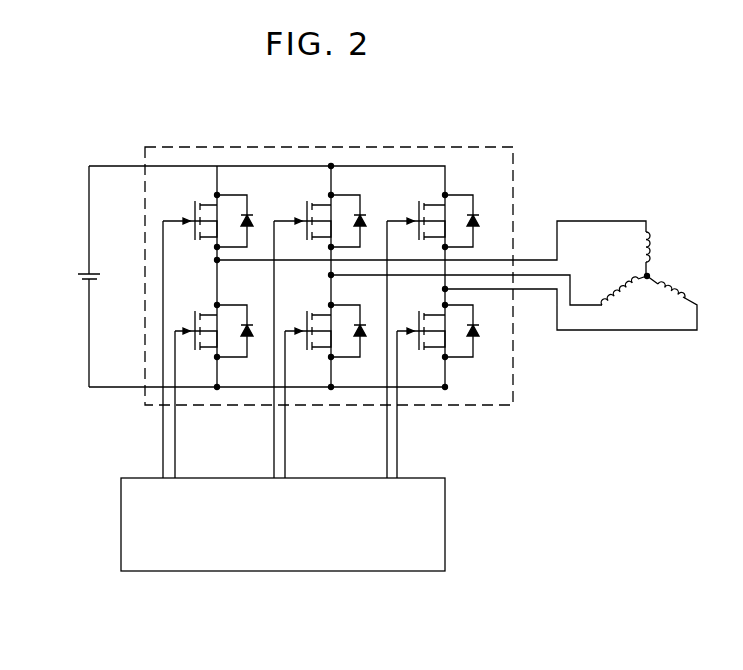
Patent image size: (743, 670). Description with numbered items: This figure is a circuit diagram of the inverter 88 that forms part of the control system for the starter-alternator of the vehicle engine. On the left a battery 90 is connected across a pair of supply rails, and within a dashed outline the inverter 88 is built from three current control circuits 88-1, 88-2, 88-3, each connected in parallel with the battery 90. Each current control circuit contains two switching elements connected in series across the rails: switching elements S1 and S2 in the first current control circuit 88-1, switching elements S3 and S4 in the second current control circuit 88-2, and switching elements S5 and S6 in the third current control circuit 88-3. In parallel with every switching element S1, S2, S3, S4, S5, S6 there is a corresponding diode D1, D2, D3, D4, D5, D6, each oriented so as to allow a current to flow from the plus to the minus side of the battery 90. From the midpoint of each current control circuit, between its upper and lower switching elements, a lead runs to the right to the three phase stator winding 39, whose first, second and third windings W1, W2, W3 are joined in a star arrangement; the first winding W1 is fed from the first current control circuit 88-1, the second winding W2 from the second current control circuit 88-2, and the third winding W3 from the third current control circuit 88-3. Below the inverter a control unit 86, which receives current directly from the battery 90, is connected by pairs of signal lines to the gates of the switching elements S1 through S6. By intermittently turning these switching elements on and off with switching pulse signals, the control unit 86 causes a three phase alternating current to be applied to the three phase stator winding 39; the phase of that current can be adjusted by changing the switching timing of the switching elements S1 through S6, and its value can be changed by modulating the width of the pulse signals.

The three phase stator winding 39 is at (477, 264).
The control unit 86 is at (445, 432).
The inverter 88 is at (467, 146).
The current control circuit 88-1 is at (209, 329).
The current control circuit 88-2 is at (324, 321).
The current control circuit 88-3 is at (442, 329).
The battery 90 is at (87, 272).
The switching element S1 is at (194, 212).
The switching element S2 is at (195, 326).
The switching element S3 is at (306, 212).
The switching element S4 is at (307, 326).
The switching element S5 is at (418, 212).
The switching element S6 is at (419, 326).
The diode D1 is at (247, 214).
The diode D2 is at (248, 324).
The diode D3 is at (360, 214).
The diode D4 is at (360, 324).
The diode D5 is at (473, 214).
The diode D6 is at (475, 330).
The first winding W1 is at (641, 251).
The second winding W2 is at (623, 298).
The third winding W3 is at (680, 291).